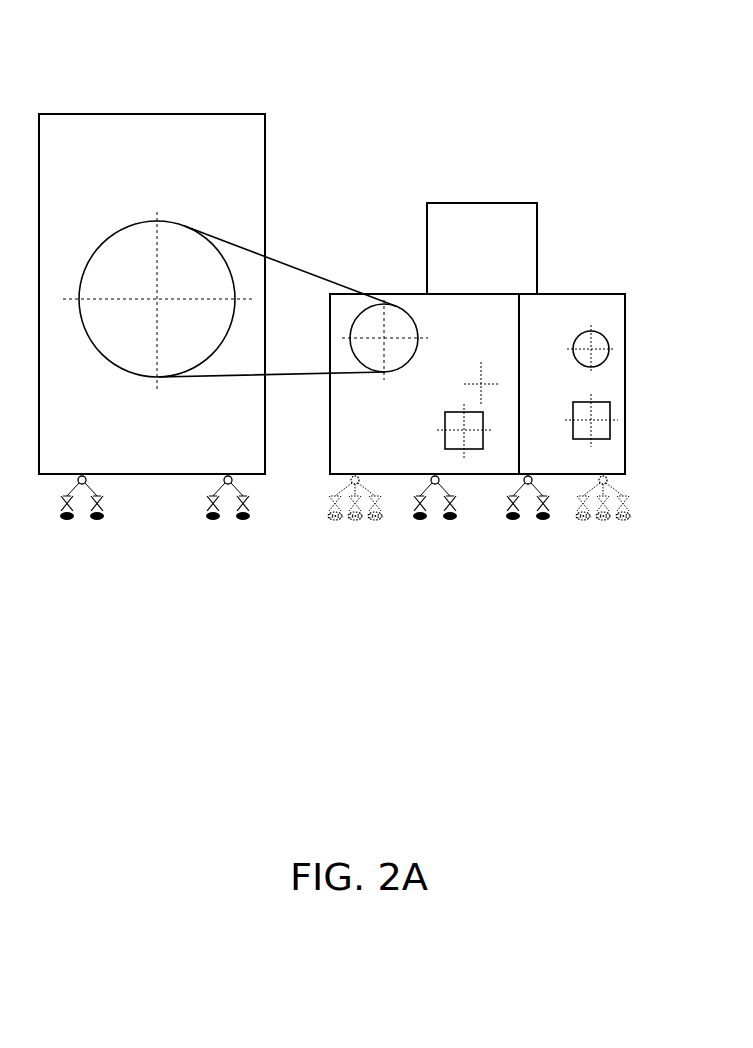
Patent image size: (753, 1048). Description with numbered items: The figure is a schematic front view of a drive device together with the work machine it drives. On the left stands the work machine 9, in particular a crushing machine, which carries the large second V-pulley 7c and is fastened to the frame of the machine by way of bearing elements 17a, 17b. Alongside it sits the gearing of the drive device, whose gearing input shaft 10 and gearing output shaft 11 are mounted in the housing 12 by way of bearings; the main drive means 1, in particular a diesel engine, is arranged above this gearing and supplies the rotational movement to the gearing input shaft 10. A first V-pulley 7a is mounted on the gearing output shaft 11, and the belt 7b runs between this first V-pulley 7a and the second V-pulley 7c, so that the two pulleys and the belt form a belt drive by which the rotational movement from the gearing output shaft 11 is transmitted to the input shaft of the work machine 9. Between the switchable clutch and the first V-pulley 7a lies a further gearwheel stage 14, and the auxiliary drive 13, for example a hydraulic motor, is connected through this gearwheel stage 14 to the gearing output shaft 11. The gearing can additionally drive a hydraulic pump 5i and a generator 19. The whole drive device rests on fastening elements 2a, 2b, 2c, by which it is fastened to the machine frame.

The main drive means 1 is at (477, 240).
The fastening element 2a is at (435, 513).
The fastening element 2b is at (528, 513).
The fastening element 2c is at (479, 513).
The hydraulic pump 5i is at (606, 434).
The V-pulley 7a is at (400, 323).
The belt 7b is at (293, 272).
The V-pulley 7c is at (118, 270).
The work machine 9 is at (183, 140).
The gearing input shaft 10 is at (481, 400).
The gearing output shaft 11 is at (382, 330).
The housing 12 is at (583, 294).
The auxiliary drive 13 is at (473, 438).
The gearwheel stage 14 is at (400, 425).
The bearing element 17a is at (82, 513).
The bearing element 17b is at (228, 513).
The generator 19 is at (607, 358).